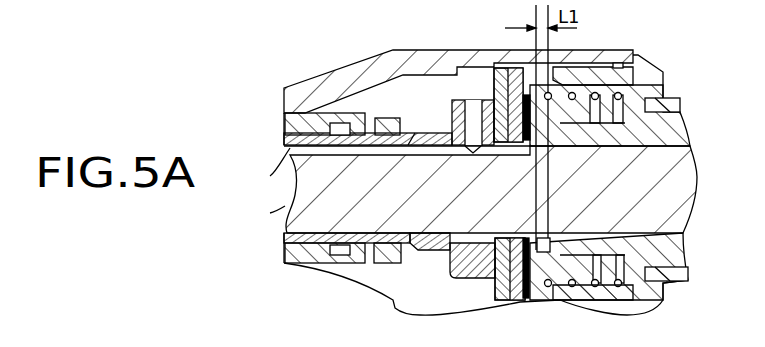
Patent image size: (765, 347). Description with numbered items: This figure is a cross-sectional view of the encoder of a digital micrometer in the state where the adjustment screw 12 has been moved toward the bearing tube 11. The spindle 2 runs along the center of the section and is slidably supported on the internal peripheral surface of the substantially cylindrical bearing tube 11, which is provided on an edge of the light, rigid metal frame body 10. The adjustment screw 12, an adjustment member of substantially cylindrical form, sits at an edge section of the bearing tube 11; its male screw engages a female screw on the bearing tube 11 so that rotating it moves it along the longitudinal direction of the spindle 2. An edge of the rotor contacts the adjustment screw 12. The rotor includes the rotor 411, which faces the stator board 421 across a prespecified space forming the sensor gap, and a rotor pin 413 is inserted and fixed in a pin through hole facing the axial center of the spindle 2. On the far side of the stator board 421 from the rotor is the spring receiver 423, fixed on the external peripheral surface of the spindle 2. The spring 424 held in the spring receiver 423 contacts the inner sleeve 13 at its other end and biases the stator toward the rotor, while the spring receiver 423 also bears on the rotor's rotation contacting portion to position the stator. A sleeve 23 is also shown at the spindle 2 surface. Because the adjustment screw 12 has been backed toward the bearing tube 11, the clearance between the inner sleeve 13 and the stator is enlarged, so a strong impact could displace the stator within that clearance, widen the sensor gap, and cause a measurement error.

The spindle 2 is at (285, 207).
The frame body 10 is at (403, 50).
The bearing tube 11 is at (306, 118).
The adjustment screw 12 is at (388, 117).
The inner sleeve 13 is at (681, 136).
The sleeve 23 is at (292, 150).
The rotor 411 is at (488, 78).
The rotor pin 413 is at (472, 108).
The stator board 421 is at (528, 95).
The spring receiver 423 is at (596, 84).
The spring 424 is at (625, 93).